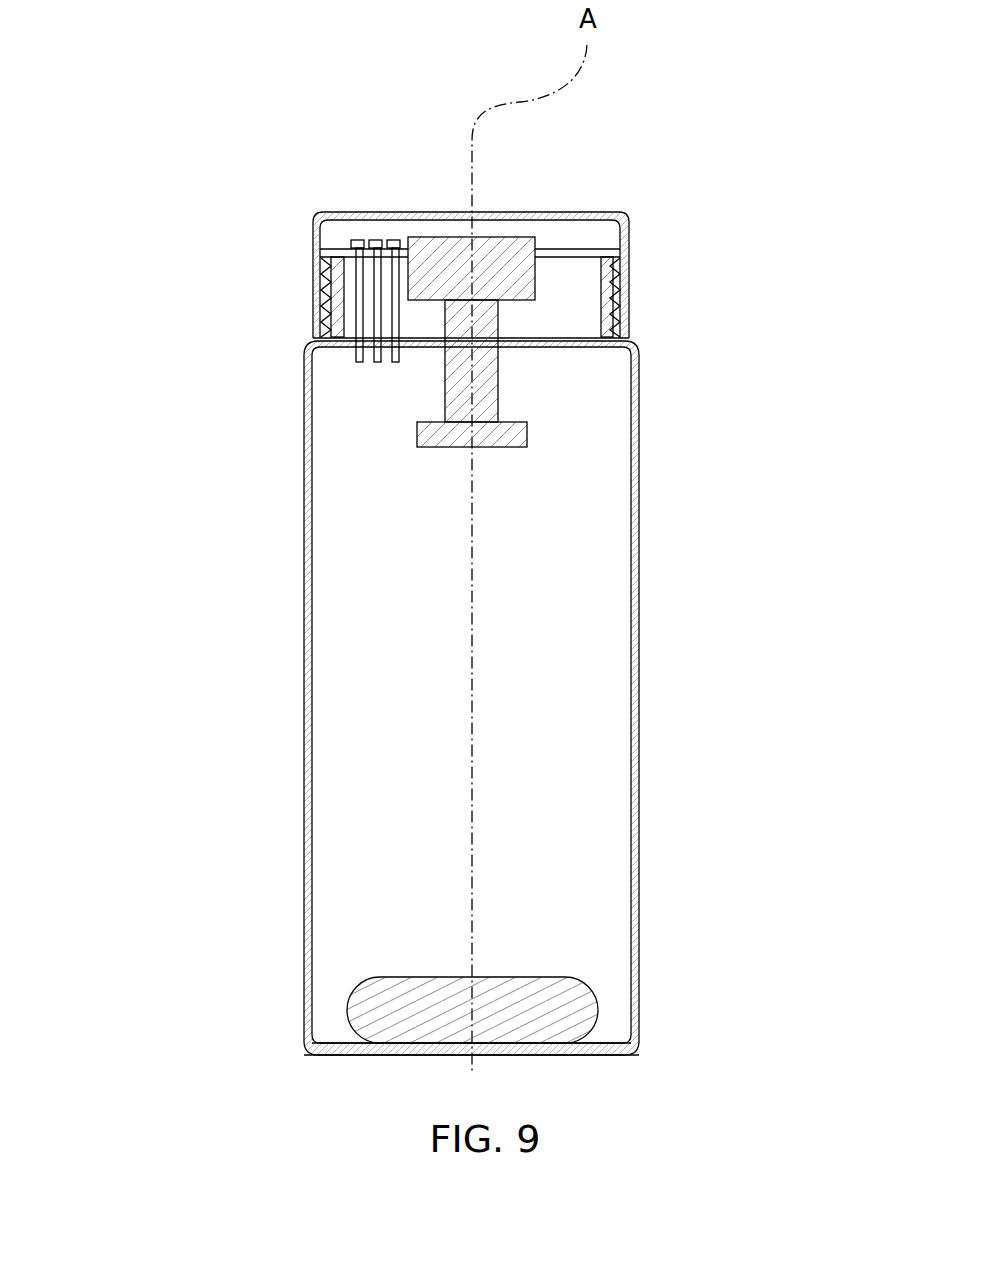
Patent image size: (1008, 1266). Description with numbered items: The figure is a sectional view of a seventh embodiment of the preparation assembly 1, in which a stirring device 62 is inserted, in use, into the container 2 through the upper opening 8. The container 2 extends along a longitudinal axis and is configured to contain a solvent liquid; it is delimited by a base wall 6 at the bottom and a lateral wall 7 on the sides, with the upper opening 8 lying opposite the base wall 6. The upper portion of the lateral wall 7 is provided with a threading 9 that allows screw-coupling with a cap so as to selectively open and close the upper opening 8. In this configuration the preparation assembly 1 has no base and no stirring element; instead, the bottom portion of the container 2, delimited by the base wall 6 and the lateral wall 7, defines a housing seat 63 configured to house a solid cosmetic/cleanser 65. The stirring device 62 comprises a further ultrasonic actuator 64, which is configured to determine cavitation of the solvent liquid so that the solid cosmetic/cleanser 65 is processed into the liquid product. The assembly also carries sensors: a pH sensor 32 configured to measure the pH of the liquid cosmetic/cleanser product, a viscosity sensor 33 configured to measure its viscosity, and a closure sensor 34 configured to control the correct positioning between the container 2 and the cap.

The preparation assembly 1 is at (220, 183).
The container 2 is at (265, 555).
The base wall 6 is at (397, 1043).
The lateral wall 7 is at (303, 607).
The upper opening 8 is at (556, 278).
The threading 9 is at (321, 298).
The pH sensor 32 is at (355, 358).
The viscosity sensor 33 is at (375, 365).
The closure sensor 34 is at (393, 365).
The stirring device 62 is at (516, 387).
The housing seat 63 is at (574, 935).
The further ultrasonic actuator 64 is at (520, 435).
The solid cosmetic/cleanser 65 is at (522, 1005).